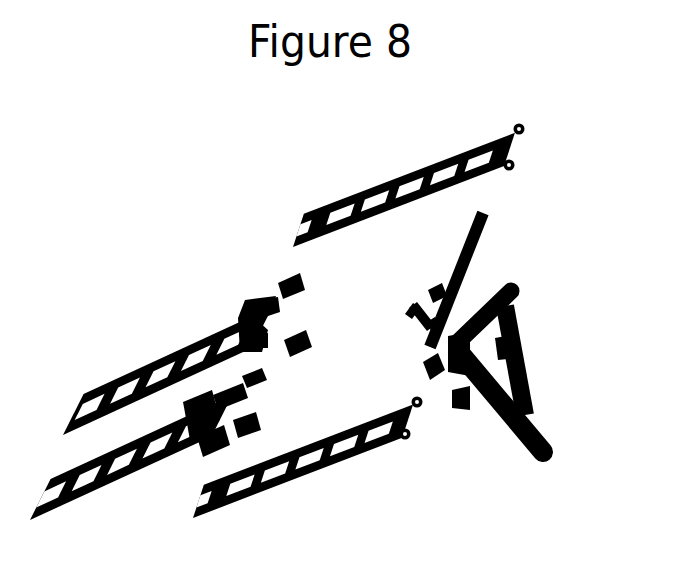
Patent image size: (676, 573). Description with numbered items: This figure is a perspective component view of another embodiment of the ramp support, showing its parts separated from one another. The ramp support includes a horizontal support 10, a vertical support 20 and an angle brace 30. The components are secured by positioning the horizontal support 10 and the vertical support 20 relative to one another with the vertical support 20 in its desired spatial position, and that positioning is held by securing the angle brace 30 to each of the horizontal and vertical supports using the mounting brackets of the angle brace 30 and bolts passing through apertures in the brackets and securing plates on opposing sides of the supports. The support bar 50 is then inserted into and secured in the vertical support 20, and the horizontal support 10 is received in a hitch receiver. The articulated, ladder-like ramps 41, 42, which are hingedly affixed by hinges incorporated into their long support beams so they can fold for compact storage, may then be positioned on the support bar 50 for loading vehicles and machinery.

The horizontal support 10 is at (491, 425).
The vertical support 20 is at (537, 277).
The angle brace 30 is at (513, 362).
The ladder-like ramp 41 is at (521, 150).
The ladder-like ramp 42 is at (162, 347).
The support bar 50 is at (478, 233).